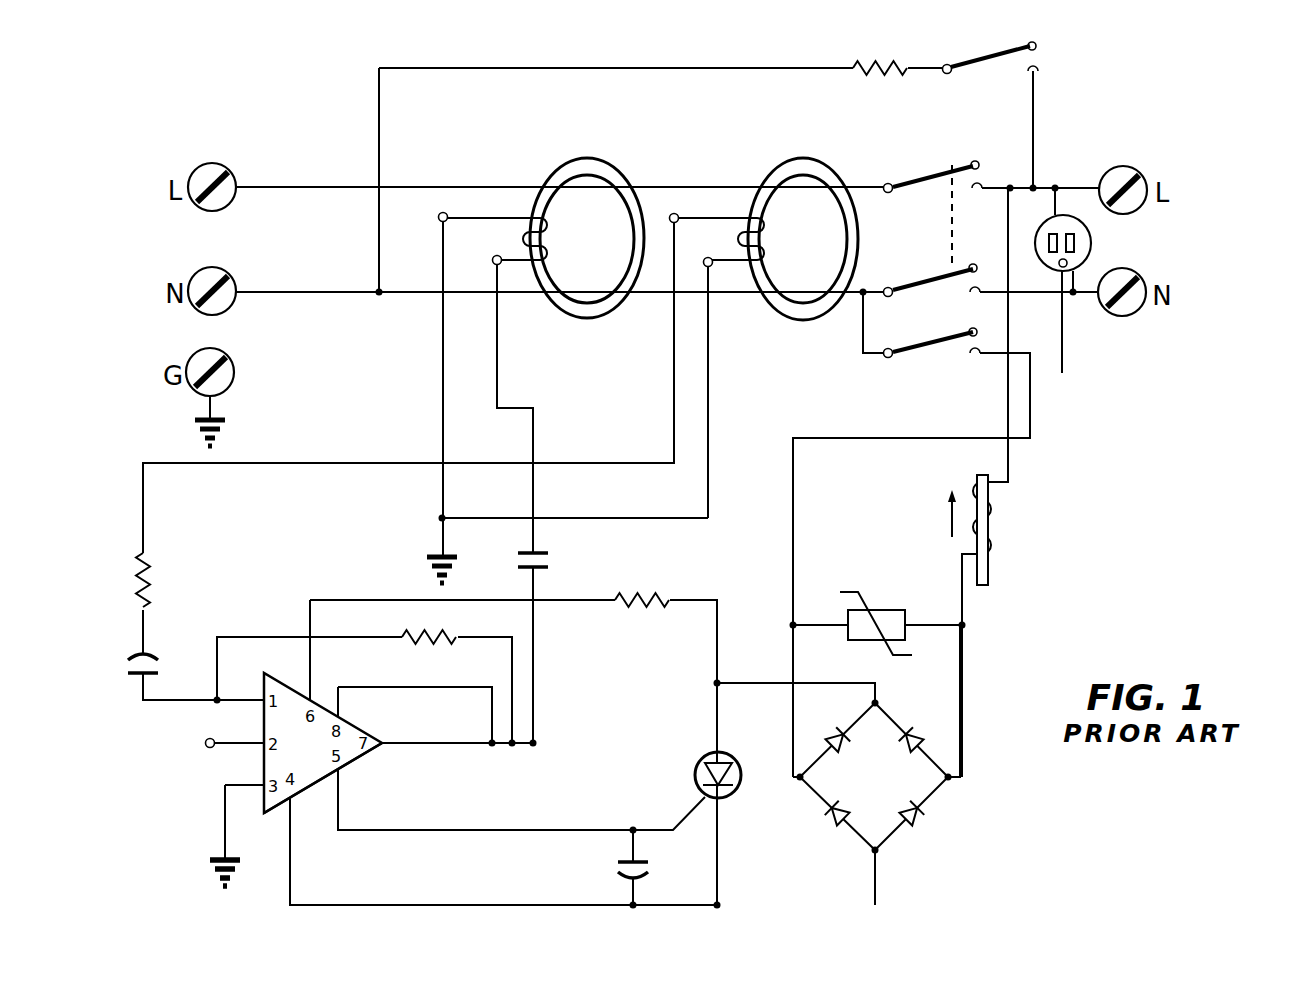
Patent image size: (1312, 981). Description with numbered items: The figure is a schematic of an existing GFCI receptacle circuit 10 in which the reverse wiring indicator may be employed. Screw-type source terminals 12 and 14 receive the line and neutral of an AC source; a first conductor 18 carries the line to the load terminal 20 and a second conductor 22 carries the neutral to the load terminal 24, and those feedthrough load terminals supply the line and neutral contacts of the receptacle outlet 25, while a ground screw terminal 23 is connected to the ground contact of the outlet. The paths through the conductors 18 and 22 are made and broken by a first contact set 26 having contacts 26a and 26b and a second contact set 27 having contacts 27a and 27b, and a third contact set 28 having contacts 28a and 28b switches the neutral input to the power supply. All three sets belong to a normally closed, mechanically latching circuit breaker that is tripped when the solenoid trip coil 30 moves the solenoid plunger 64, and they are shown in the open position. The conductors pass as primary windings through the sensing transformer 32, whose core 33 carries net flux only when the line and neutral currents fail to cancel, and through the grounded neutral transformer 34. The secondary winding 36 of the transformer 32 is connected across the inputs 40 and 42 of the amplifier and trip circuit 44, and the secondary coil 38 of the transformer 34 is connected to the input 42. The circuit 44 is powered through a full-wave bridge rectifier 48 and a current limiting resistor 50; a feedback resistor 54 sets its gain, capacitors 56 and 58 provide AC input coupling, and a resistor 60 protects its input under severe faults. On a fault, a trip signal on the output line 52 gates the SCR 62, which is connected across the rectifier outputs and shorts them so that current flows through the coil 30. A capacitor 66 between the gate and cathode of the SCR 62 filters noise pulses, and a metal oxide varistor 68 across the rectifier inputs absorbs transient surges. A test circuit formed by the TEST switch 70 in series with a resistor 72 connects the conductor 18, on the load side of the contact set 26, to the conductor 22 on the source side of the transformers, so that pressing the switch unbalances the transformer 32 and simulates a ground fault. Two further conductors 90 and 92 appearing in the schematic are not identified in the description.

The GFCI receptacle circuit 10 is at (308, 112).
The AC line source terminal 12 is at (208, 167).
The AC neutral source terminal 14 is at (212, 268).
The first conductor 18 is at (287, 187).
The AC line load terminal 20 is at (1125, 167).
The second conductor 22 is at (328, 298).
The ground screw terminal 23 is at (223, 383).
The AC neutral load terminal 24 is at (1125, 315).
The AC receptacle outlet 25 is at (1093, 248).
The first contact set 26 is at (932, 167).
The first contact of first contact set 26a is at (975, 158).
The second contact of first contact set 26b is at (982, 183).
The second contact set 27 is at (922, 270).
The first contact of second contact set 27a is at (973, 262).
The second contact of second contact set 27b is at (963, 292).
The third contact set 28 is at (928, 353).
The first contact of third contact set 28a is at (978, 333).
The second contact of third contact set 28b is at (977, 363).
The solenoid trip coil 30 is at (998, 545).
The sensing transformer 32 is at (832, 162).
The core 33 is at (777, 170).
The grounded neutral transformer 34 is at (612, 160).
The secondary winding 36 is at (762, 253).
The secondary coil 38 is at (548, 253).
The input 40 is at (242, 697).
The input 42 is at (243, 785).
The amplifier and trip circuit 44 is at (357, 763).
The full-wave bridge rectifier 48 is at (946, 812).
The current limiting resistor 50 is at (652, 612).
The output line 52 is at (482, 828).
The feedback resistor 54 is at (420, 647).
The capacitor 56 is at (132, 677).
The capacitor 58 is at (548, 567).
The resistor 60 is at (138, 570).
The silicon controlled rectifier 62 is at (702, 762).
The solenoid plunger 64 is at (980, 587).
The capacitor 66 is at (618, 877).
The metal oxide varistor 68 is at (882, 617).
The TEST switch 70 is at (1012, 60).
The current limiting resistor 72 is at (850, 83).
The conductor 90 is at (1013, 462).
The conductor 92 is at (795, 530).